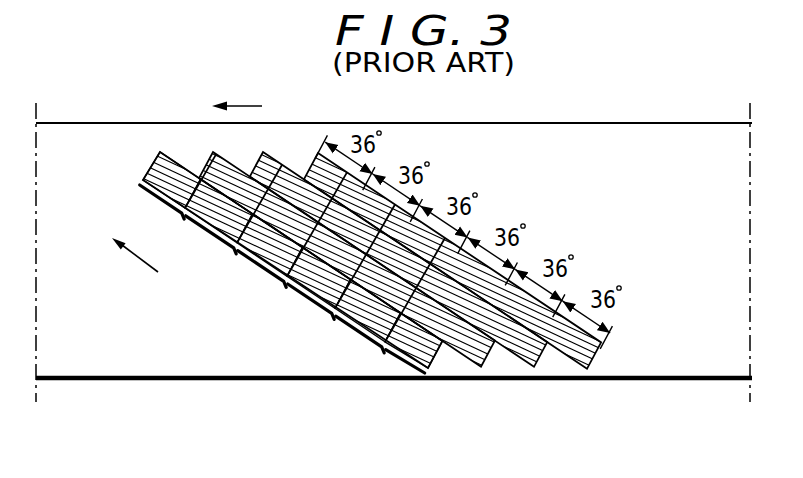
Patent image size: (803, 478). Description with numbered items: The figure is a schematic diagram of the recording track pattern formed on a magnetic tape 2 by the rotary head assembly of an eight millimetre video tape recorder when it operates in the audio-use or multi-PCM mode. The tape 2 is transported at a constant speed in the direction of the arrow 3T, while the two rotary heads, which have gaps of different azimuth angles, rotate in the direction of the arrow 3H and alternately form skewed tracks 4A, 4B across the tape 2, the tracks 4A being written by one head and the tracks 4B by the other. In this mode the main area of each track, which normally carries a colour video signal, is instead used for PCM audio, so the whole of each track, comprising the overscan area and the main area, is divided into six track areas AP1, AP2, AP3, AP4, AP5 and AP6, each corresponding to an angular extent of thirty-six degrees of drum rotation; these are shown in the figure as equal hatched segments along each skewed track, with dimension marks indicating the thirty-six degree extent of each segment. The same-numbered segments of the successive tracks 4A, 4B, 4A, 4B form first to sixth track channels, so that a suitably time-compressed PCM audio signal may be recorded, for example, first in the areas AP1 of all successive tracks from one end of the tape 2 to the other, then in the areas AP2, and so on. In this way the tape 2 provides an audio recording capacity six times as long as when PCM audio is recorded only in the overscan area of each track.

The magnetic tape 2 is at (683, 362).
The track 4A is at (443, 357).
The track 4B is at (497, 357).
The track area AP1 is at (402, 358).
The track area AP2 is at (349, 318).
The track area AP3 is at (299, 288).
The track area AP4 is at (249, 258).
The track area AP5 is at (206, 223).
The track area AP6 is at (156, 193).
The arrow indicating tape transport direction 3T is at (243, 106).
The arrow indicating head rotation direction 3H is at (128, 255).